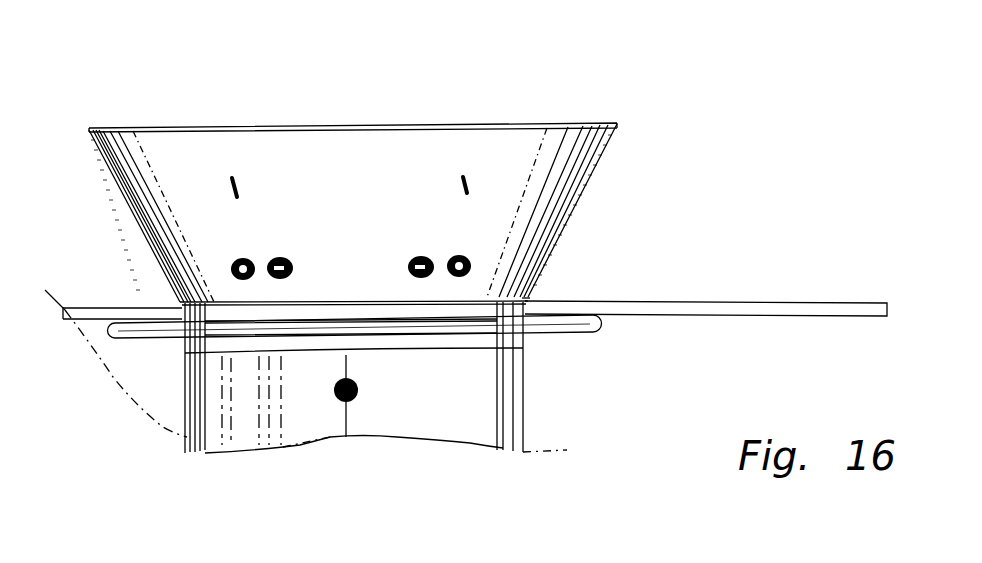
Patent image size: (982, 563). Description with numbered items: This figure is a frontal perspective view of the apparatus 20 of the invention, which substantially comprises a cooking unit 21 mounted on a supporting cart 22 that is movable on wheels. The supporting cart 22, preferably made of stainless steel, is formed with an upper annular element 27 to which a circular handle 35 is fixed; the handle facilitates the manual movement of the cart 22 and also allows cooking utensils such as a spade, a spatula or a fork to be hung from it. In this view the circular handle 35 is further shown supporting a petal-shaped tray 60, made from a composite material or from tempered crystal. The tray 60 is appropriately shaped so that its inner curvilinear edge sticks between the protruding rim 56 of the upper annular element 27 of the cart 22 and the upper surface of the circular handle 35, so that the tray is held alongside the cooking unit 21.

The apparatus 20 is at (198, 80).
The cooking unit 21 is at (368, 221).
The supporting cart 22 is at (458, 430).
The upper annular element 27 is at (520, 340).
The circular handle 35 is at (601, 333).
The protruding rim 56 is at (529, 298).
The petal-shaped trays 60 is at (121, 305).